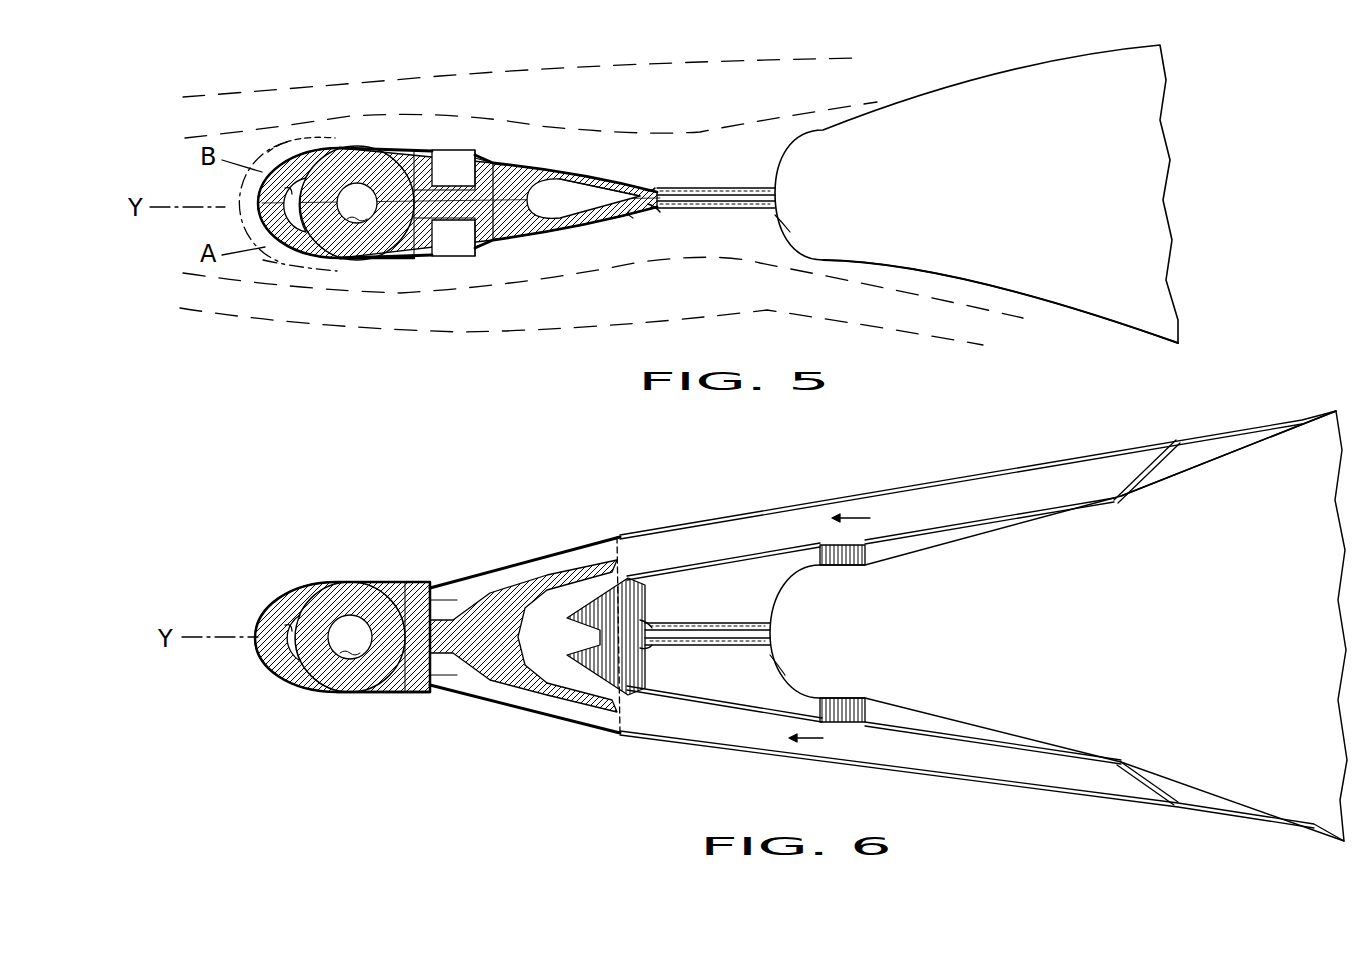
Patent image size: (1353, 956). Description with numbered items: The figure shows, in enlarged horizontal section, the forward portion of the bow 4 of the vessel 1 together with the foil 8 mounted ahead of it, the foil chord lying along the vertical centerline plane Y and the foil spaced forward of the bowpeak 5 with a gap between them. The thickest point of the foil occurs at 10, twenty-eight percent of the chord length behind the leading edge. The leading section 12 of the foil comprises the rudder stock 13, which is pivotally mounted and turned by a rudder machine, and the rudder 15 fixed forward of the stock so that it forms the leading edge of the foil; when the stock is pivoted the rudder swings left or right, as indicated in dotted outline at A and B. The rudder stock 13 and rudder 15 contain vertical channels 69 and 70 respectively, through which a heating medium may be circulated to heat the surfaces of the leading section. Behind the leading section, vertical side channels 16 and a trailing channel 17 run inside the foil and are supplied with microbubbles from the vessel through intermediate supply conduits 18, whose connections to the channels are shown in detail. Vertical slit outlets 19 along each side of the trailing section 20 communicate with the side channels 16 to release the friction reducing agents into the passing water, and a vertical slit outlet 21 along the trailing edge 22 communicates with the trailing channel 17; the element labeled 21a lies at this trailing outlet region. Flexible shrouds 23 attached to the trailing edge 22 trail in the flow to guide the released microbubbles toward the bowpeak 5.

In FIG. 5, the vessel 1 is at (1046, 290).
In FIG. 6, the vessel 1 is at (1230, 437).
In FIG. 5, the bow 4 is at (833, 208).
In FIG. 6, the bow 4 is at (898, 648).
In FIG. 5, the bowpeak 5 is at (775, 228).
In FIG. 6, the bowpeak 5 is at (770, 665).
In FIG. 5, the foil 8 is at (412, 150).
In FIG. 6, the foil 8 is at (410, 582).
In FIG. 5, the thickest point of the foil 10 is at (358, 262).
In FIG. 6, the thickest point of the foil 10 is at (350, 694).
In FIG. 5, the leading section 12 is at (345, 262).
In FIG. 6, the leading section 12 is at (340, 580).
In FIG. 5, the rudder stock 13 is at (352, 150).
In FIG. 6, the rudder stock 13 is at (330, 590).
In FIG. 5, the rudder 15 is at (290, 145).
In FIG. 6, the rudder 15 is at (275, 660).
In FIG. 5, the vertical side channels 16 is at (445, 168).
In FIG. 6, the vertical side channels 16 is at (455, 598).
In FIG. 5, the trailing channel 17 is at (563, 218).
In FIG. 6, the trailing channel 17 is at (553, 647).
In FIG. 6, the intermediate supply conduits 18 is at (590, 556).
In FIG. 5, the vertical slit outlets 19 is at (492, 168).
In FIG. 5, the trailing section 20 is at (582, 172).
In FIG. 5, the vertical slit outlet 21 is at (660, 210).
In FIG. 6, the vertical slit outlet 21 is at (662, 622).
In FIG. 5, the nozzle 21a is at (633, 216).
In FIG. 6, the nozzle 21a is at (608, 696).
In FIG. 5, the trailing edge 22 is at (650, 186).
In FIG. 6, the trailing edge 22 is at (655, 645).
In FIG. 5, the shrouds 23 is at (736, 186).
In FIG. 6, the shrouds 23 is at (732, 622).
In FIG. 5, the vertical channel 69 is at (357, 203).
In FIG. 6, the vertical channel 69 is at (350, 637).
In FIG. 5, the vertical channel 70 is at (297, 252).
In FIG. 6, the vertical channel 70 is at (290, 660).